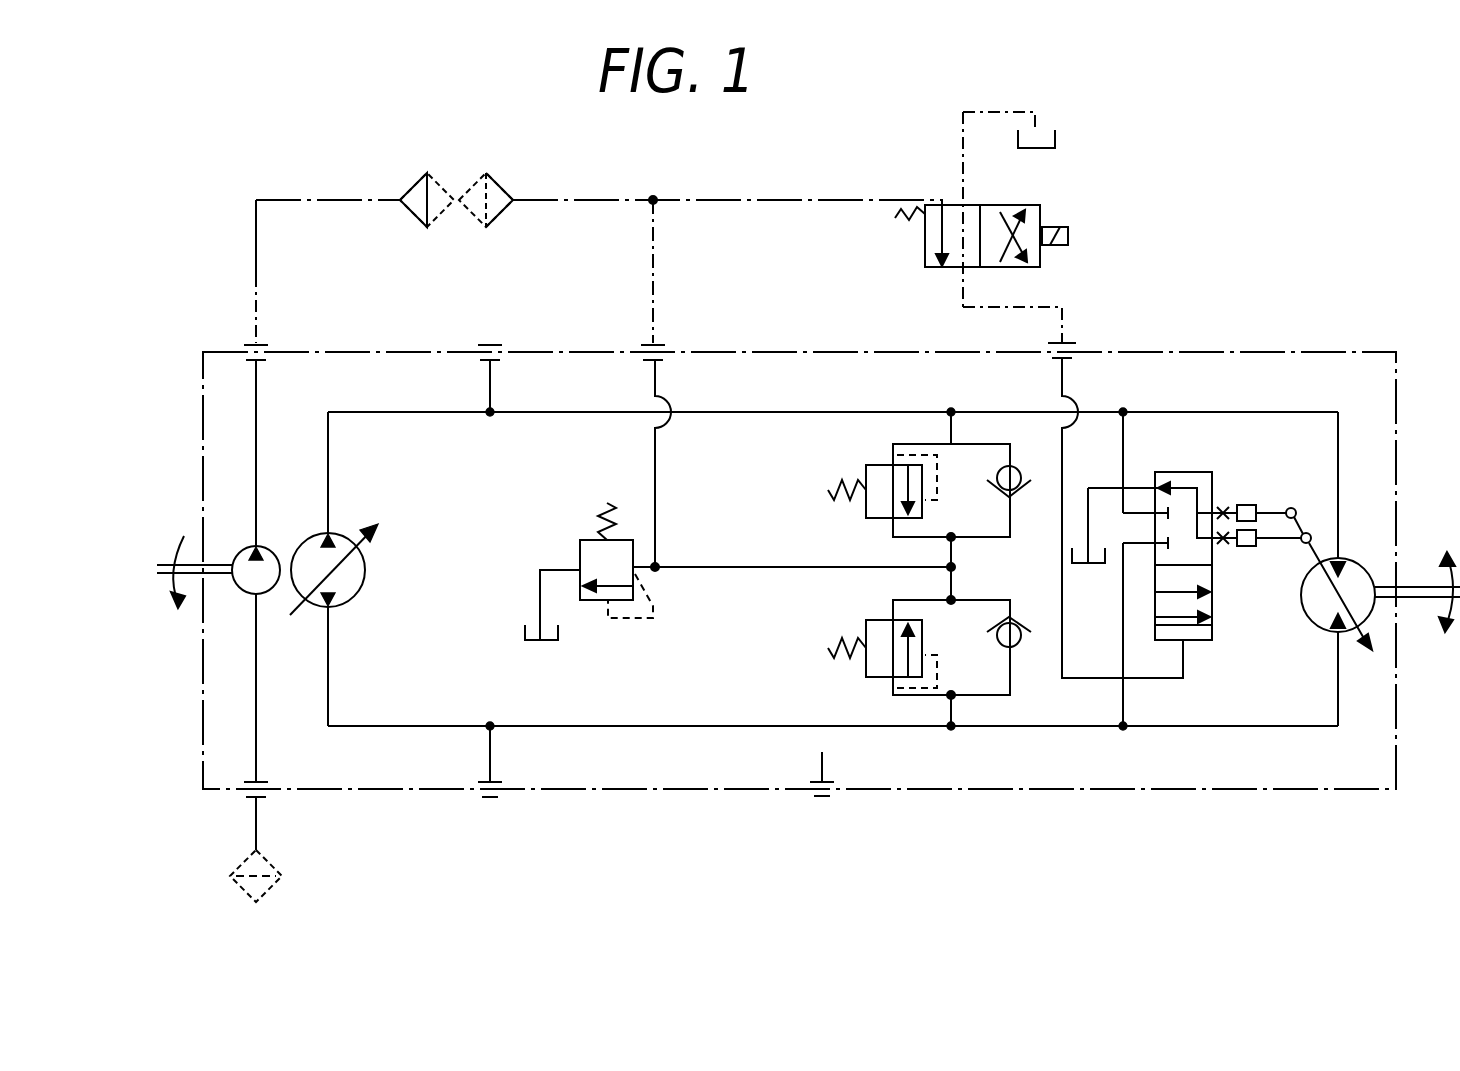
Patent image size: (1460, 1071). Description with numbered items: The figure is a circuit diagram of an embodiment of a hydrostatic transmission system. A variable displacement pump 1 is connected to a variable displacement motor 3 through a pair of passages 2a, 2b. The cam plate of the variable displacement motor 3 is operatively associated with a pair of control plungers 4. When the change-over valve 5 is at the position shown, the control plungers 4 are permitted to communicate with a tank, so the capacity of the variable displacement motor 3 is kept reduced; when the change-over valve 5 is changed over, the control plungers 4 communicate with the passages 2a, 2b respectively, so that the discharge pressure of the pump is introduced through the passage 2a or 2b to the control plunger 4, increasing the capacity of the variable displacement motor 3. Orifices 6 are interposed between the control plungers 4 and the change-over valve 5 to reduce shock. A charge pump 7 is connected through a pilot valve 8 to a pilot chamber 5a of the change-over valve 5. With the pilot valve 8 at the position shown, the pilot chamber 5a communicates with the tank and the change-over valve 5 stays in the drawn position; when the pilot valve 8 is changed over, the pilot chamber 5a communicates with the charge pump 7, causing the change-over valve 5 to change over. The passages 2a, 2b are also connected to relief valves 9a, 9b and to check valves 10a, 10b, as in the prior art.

The variable displacement pump 1 is at (366, 585).
The passage 2a is at (750, 416).
The passage 2b is at (641, 728).
The variable displacement motor 3 is at (1366, 574).
The control plunger 4 is at (1245, 505).
The change-over valve 5 is at (1200, 466).
The pilot chamber 5a is at (1183, 641).
The orifice 6 is at (1222, 508).
The charge pump 7 is at (268, 551).
The pilot valve 8 is at (1045, 204).
The relief valve 9a is at (868, 464).
The relief valve 9b is at (864, 624).
The check valve 10a is at (1022, 482).
The check valve 10b is at (1020, 645).